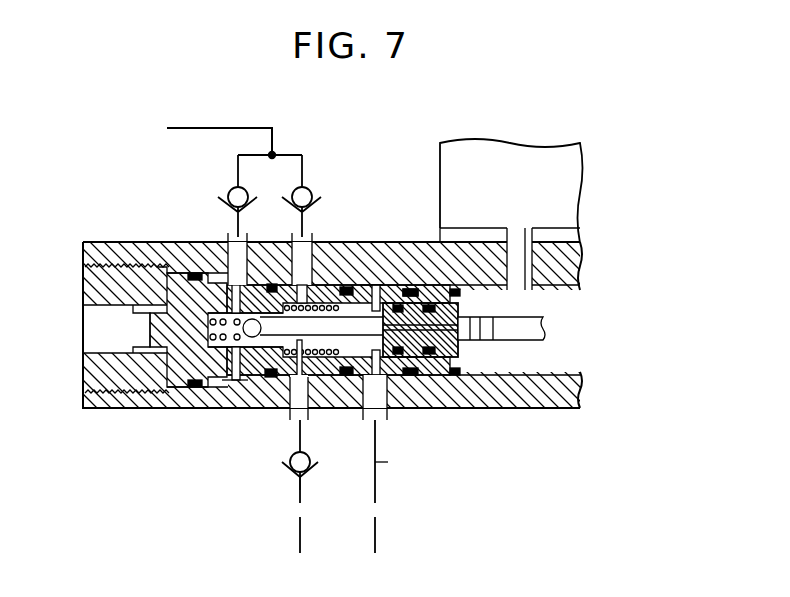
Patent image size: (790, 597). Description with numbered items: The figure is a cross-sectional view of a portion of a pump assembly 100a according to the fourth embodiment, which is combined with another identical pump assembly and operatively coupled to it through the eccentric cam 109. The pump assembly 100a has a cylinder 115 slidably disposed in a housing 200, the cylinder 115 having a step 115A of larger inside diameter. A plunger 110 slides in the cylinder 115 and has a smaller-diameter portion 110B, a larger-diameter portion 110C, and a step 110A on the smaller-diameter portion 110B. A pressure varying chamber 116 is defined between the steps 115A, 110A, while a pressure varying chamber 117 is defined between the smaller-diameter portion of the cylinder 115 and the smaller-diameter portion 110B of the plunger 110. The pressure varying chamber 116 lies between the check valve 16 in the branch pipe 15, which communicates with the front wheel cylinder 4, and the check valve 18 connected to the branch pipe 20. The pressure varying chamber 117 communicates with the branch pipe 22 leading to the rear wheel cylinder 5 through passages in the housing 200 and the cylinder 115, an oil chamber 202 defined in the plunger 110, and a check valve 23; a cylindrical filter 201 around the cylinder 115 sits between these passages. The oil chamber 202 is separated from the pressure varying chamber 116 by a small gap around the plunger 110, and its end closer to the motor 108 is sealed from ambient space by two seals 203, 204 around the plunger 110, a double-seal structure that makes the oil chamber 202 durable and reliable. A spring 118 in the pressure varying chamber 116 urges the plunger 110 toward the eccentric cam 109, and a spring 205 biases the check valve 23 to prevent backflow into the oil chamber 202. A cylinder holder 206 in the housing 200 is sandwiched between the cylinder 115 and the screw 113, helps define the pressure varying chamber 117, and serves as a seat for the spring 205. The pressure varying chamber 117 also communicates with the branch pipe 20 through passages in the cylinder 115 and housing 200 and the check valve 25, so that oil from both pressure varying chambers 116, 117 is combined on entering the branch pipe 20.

The branch pipe 20 is at (203, 127).
The check valve 25 is at (233, 195).
The check valve 18 is at (305, 192).
The spring 205 is at (229, 242).
The spring 118 is at (340, 285).
The cylindrical filter 201 is at (387, 285).
The seal 203 is at (410, 288).
The motor 108 is at (548, 187).
The seal 204 is at (583, 240).
The oil chamber 202 is at (462, 304).
The eccentric cam 109 is at (545, 328).
The plunger 110 is at (462, 345).
The cylinder holder 206 is at (158, 328).
The screw 113 is at (120, 376).
The housing 200 is at (110, 406).
The pressure varying chamber 117 is at (207, 407).
The cylinder 115 is at (223, 407).
The check valve 23 is at (247, 408).
The step 115A is at (268, 407).
The check valve 16 is at (300, 470).
The branch pipe 15 is at (303, 488).
The smaller-diameter portion 110B is at (307, 400).
The pressure varying chamber 116 is at (335, 407).
The branch pipe 22 is at (388, 462).
The step 110A is at (385, 410).
The larger-diameter portion 110C is at (452, 413).
The pump assembly 100a is at (458, 458).
The front wheel cylinder 4 is at (300, 502).
The rear wheel cylinder 5 is at (375, 500).